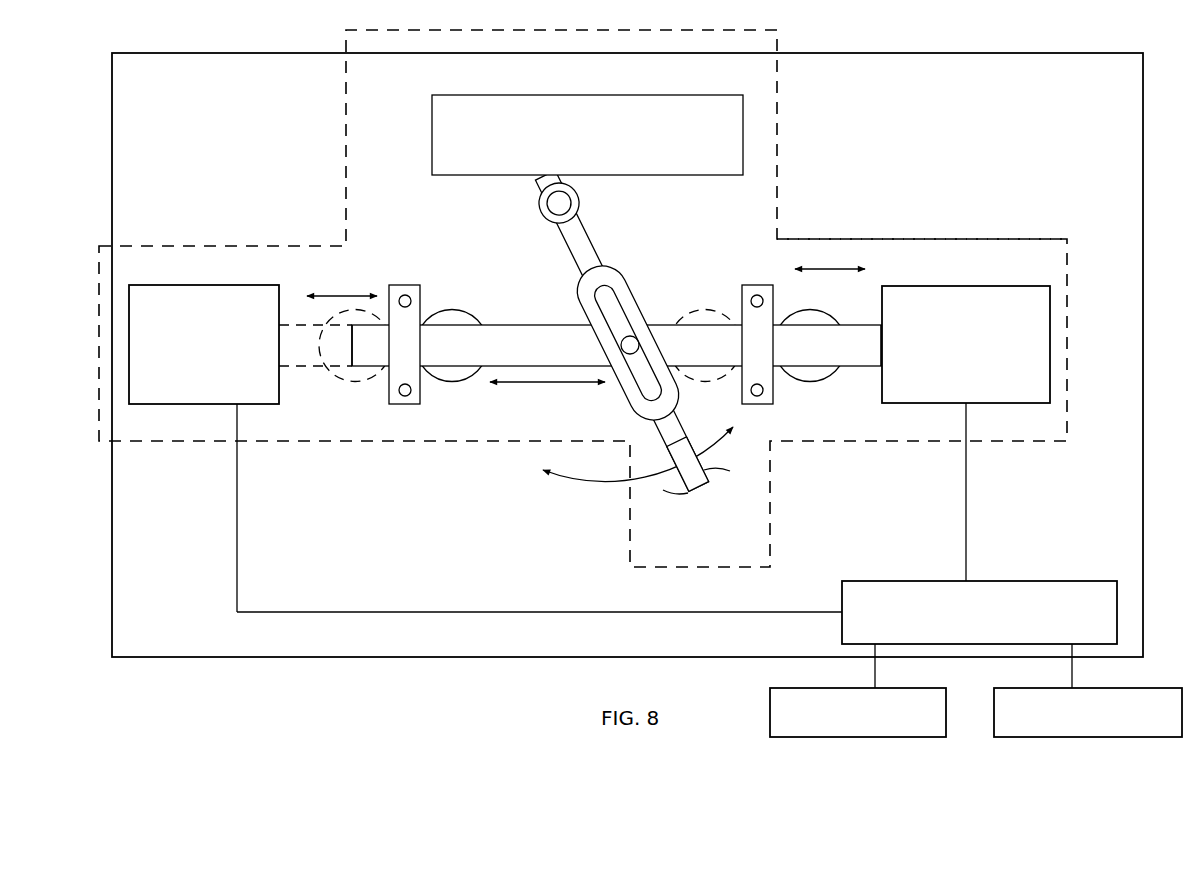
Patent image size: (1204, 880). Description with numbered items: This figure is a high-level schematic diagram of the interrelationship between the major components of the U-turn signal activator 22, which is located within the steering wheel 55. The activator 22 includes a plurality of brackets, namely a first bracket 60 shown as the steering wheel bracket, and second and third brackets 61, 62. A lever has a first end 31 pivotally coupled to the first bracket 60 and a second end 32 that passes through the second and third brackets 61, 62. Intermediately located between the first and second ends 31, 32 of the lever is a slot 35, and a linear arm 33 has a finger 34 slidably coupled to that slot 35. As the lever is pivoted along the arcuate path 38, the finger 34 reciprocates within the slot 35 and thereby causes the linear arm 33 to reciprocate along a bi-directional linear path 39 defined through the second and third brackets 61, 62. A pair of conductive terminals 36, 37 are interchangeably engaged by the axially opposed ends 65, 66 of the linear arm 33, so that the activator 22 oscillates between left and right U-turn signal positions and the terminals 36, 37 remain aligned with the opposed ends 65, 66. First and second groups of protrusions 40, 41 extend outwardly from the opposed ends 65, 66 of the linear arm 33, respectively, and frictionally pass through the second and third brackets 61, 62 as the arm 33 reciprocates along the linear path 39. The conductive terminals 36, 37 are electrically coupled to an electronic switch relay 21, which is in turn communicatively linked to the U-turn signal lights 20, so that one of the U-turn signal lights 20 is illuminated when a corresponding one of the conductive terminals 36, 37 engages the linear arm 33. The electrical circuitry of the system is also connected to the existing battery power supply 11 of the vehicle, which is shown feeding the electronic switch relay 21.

The battery power supply 11 is at (1095, 728).
The U-turn signal lights 20 is at (786, 722).
The electronic switch relay 21 is at (898, 588).
The U-turn signal activator 22 is at (818, 252).
The first end of lever 31 is at (580, 244).
The second end of lever 32 is at (692, 481).
The linear arm 33 is at (526, 340).
The finger 34 is at (631, 345).
The slot 35 is at (610, 304).
The conductive terminal 36 is at (149, 298).
The conductive terminal 37 is at (1036, 303).
The arcuate path 38 is at (578, 480).
The bi-directional linear path 39 is at (343, 296).
The first group of protrusions 40 is at (332, 375).
The second group of protrusions 41 is at (805, 376).
The steering wheel 55 is at (845, 136).
The first bracket 60 is at (448, 154).
The second bracket 61 is at (410, 295).
The third bracket 62 is at (753, 300).
The first end of linear arm 65 is at (367, 353).
The second end of linear arm 66 is at (868, 353).